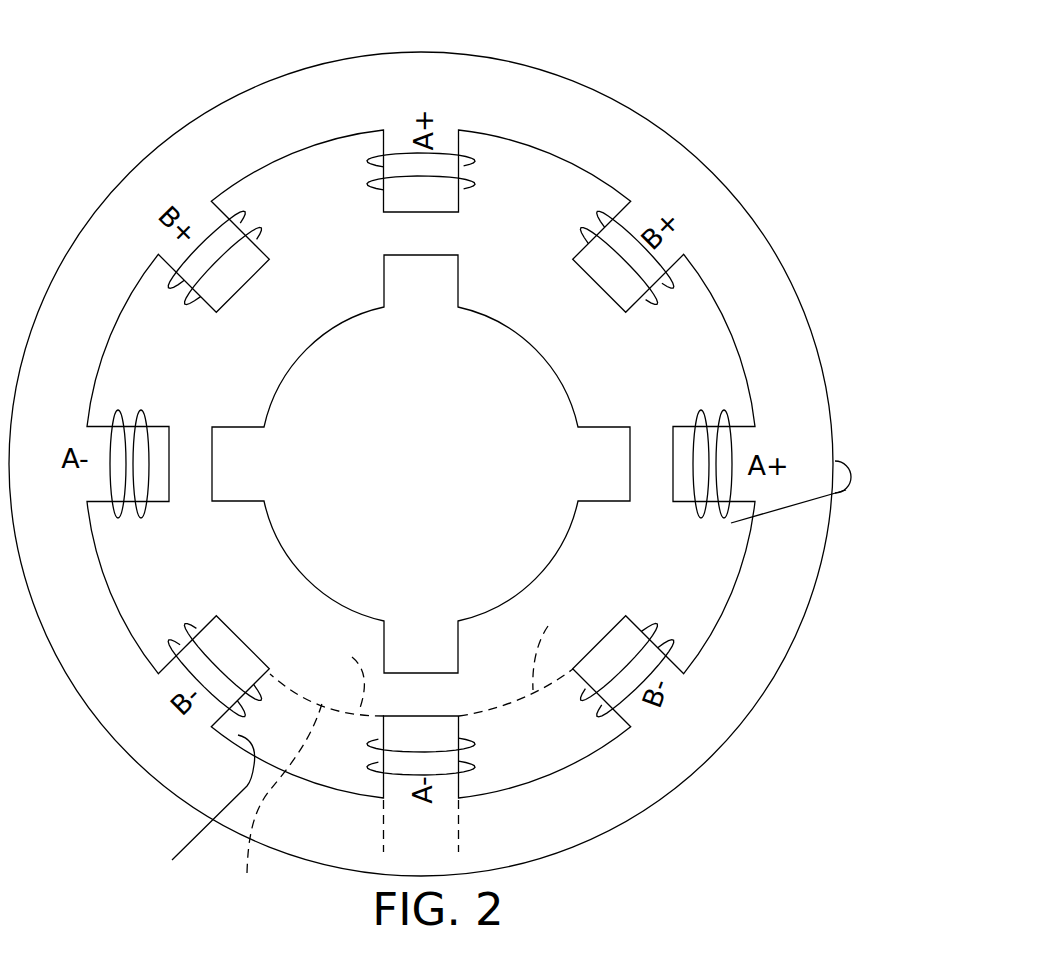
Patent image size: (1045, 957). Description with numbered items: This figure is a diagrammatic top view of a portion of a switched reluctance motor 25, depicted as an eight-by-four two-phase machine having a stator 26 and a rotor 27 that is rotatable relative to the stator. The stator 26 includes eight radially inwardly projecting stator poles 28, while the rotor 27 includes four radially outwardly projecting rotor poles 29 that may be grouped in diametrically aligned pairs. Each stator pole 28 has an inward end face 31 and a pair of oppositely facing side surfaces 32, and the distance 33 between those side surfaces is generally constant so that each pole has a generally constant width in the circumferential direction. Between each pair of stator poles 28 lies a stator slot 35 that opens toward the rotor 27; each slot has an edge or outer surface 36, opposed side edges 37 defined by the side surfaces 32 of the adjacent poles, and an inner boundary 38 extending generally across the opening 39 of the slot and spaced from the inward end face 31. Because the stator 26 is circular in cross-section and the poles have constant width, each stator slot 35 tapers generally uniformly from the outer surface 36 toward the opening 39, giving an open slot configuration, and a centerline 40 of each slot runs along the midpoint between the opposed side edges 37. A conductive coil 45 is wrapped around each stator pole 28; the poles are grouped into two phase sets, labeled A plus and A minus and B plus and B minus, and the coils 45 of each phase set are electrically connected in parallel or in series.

The switched reluctance motor 25 is at (614, 90).
The stator 26 is at (695, 200).
The rotor 27 is at (527, 407).
The stator pole 28 is at (588, 263).
The rotor pole 29 is at (440, 290).
The inward end face 31 is at (168, 465).
The side surface 32 is at (160, 506).
The distance between side surfaces 33 is at (332, 825).
The stator slot 35 is at (323, 195).
The outer surface 36 is at (195, 814).
The side edge 37 is at (255, 700).
The inner boundary 38 is at (428, 656).
The opening 39 is at (295, 677).
The centerline 40 is at (276, 801).
The coil 45 is at (476, 163).